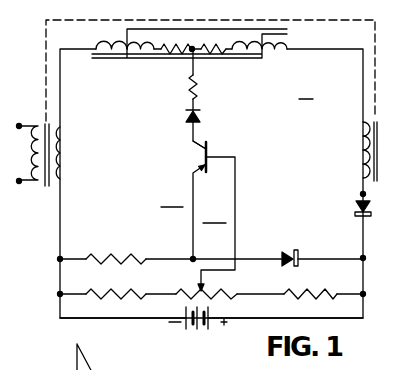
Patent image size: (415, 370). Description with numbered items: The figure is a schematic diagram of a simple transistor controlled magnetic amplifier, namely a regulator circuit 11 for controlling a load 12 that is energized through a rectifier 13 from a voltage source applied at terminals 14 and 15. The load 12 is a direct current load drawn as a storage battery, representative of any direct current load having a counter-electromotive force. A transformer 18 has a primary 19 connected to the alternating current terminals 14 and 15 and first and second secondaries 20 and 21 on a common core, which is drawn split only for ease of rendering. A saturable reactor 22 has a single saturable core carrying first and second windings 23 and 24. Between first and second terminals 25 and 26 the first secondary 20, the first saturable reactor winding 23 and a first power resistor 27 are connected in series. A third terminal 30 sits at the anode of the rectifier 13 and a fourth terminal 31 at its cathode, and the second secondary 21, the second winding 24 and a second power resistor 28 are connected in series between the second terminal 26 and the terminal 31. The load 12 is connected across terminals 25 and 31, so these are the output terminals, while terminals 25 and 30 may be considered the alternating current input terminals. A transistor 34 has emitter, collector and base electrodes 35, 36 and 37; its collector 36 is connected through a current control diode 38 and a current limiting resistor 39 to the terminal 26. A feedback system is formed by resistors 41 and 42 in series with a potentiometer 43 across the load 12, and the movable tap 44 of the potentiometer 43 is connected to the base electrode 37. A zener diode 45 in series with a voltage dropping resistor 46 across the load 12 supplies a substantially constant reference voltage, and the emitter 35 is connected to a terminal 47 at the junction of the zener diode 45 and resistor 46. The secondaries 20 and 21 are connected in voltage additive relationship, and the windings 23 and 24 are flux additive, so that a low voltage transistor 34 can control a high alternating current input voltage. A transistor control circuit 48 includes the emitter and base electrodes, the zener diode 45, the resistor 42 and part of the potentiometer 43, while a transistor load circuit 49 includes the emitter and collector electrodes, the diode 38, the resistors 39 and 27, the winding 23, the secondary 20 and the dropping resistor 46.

The regulator circuit 11 is at (309, 92).
The load 12 is at (214, 323).
The rectifier 13 is at (372, 211).
The terminal 14 is at (21, 125).
The terminal 15 is at (20, 185).
The transformer 18 is at (44, 167).
The primary 19 is at (39, 158).
The first secondary 20 is at (59, 134).
The second secondary 21 is at (362, 142).
The saturable reactor 22 is at (112, 55).
The first winding 23 is at (115, 41).
The second winding 24 is at (292, 37).
The first terminal 25 is at (58, 262).
The second terminal 26 is at (193, 51).
The first power resistor 27 is at (170, 48).
The second power resistor 28 is at (222, 51).
The third terminal 30 is at (363, 196).
The fourth terminal 31 is at (366, 258).
The transistor 34 is at (209, 148).
The emitter electrode 35 is at (199, 169).
The collector electrode 36 is at (194, 148).
The base electrode 37 is at (227, 160).
The current control diode 38 is at (203, 113).
The current limiting resistor 39 is at (199, 85).
The resistor 41 is at (100, 293).
The resistor 42 is at (306, 293).
The potentiometer 43 is at (222, 292).
The movable tap 44 is at (201, 281).
The zener diode 45 is at (310, 248).
The voltage dropping resistor 46 is at (103, 257).
The terminal 47 is at (196, 258).
The transistor control circuit 48 is at (214, 215).
The transistor load circuit 49 is at (172, 199).